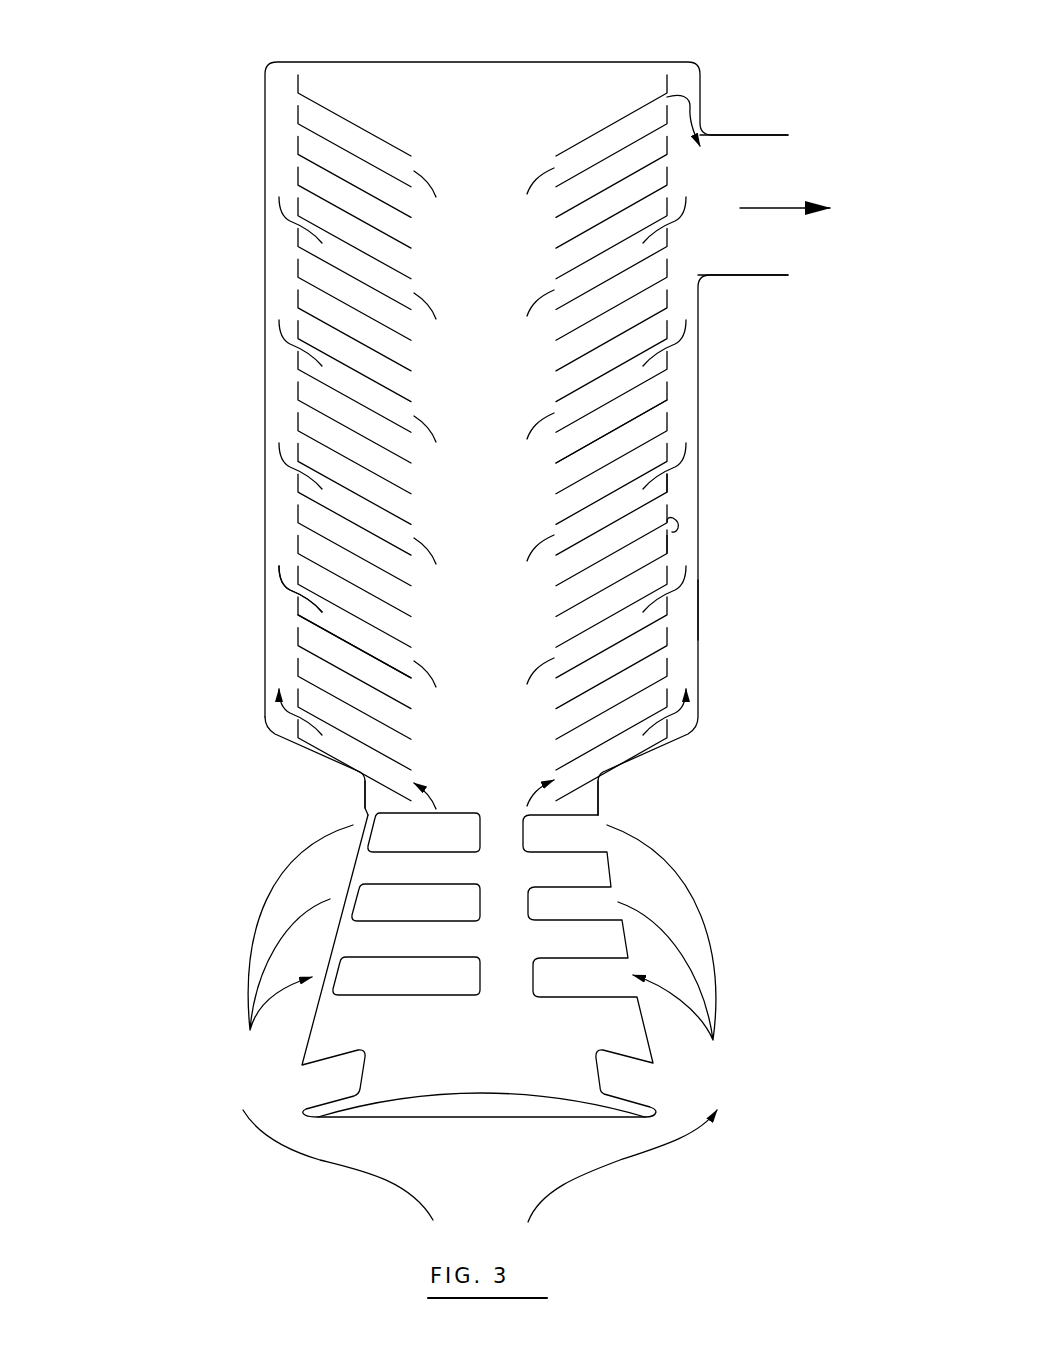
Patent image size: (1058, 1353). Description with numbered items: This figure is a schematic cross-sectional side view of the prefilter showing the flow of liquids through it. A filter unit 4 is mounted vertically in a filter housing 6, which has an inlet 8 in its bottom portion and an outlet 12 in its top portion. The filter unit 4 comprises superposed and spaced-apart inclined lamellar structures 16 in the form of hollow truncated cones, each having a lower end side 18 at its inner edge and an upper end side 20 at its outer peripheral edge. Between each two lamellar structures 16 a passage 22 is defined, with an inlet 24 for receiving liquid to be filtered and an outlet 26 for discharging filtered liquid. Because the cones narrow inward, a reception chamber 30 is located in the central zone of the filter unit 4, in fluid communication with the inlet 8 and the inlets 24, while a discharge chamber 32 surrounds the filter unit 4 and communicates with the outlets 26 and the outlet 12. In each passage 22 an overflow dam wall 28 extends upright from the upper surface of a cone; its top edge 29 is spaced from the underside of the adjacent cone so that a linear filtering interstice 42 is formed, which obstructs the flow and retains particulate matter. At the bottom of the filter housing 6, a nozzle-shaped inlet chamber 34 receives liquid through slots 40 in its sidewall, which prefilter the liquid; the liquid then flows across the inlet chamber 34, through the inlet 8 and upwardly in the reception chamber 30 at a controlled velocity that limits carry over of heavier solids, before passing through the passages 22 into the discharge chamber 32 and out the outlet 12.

The filter unit 4 is at (482, 400).
The filter housing 6 is at (262, 258).
The inlet 8 is at (479, 806).
The outlet 12 is at (713, 173).
The lamellar structures 16 is at (575, 633).
The lower end side 18 is at (420, 213).
The upper end side 20 is at (667, 610).
The passage 22 is at (583, 458).
The inlet 24 is at (405, 631).
The outlet 26 is at (297, 595).
The overflow dam wall 28 is at (677, 540).
The top edge 29 is at (681, 530).
The reception chamber 30 is at (497, 400).
The discharge chamber 32 is at (290, 400).
The inlet chamber 34 is at (480, 1023).
The slots 40 is at (418, 920).
The linear filtering interstice 42 is at (670, 492).